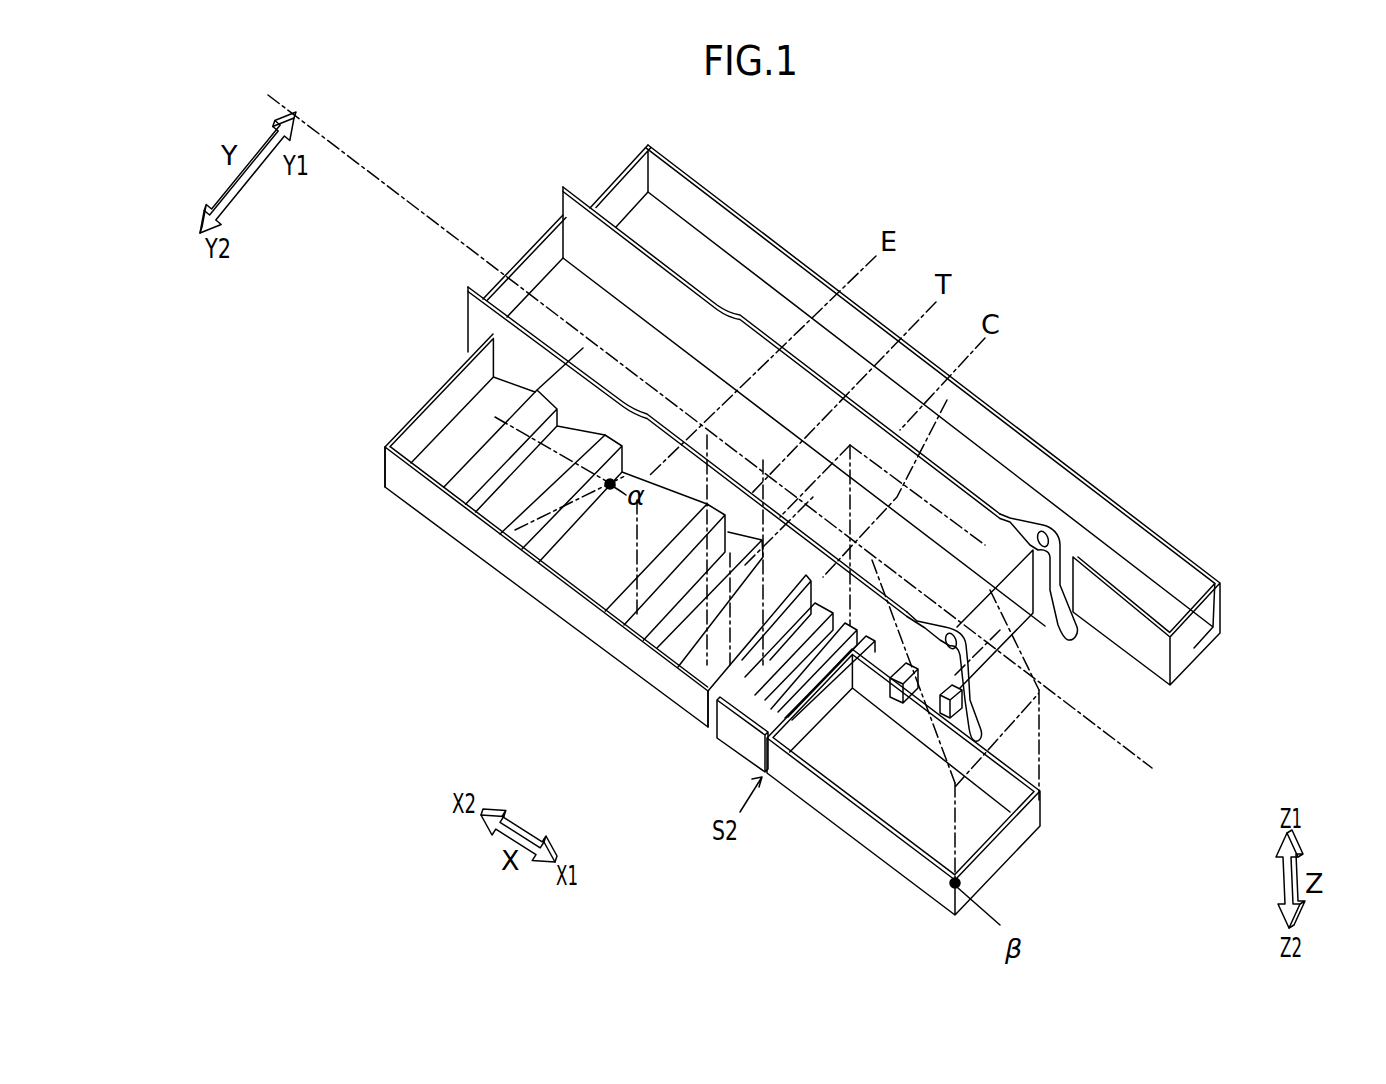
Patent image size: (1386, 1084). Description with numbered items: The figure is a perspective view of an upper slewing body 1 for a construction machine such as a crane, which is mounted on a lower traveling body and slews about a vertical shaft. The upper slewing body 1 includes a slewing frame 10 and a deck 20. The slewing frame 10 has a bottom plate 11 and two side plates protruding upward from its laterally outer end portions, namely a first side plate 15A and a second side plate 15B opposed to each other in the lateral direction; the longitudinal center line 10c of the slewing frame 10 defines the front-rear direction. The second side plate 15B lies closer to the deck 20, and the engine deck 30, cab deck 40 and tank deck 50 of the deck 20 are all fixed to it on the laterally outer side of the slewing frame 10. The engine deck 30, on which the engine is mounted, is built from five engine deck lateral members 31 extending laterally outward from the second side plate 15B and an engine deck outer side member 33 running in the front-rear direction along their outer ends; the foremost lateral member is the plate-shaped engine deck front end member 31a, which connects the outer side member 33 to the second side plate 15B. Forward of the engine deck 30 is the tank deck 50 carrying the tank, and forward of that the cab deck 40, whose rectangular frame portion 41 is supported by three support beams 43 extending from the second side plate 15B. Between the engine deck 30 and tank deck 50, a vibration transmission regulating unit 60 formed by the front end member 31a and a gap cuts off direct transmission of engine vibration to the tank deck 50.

The upper slewing body 1 is at (1145, 280).
The slewing frame 10 is at (1133, 718).
The center line 10c is at (342, 148).
The bottom plate 11 is at (558, 287).
The first side plate 15A is at (560, 207).
The second side plate 15B is at (470, 318).
The deck 20 is at (1021, 882).
The engine deck 30 is at (545, 602).
The engine deck lateral member 31 is at (452, 410).
The engine deck front end member 31a is at (730, 668).
The engine deck outer side member 33 is at (513, 568).
The cab deck 40 is at (838, 822).
The frame portion 41 is at (930, 743).
The support beam 43 is at (907, 668).
The tank deck 50 is at (737, 745).
The vibration transmission regulating unit 60 is at (706, 738).